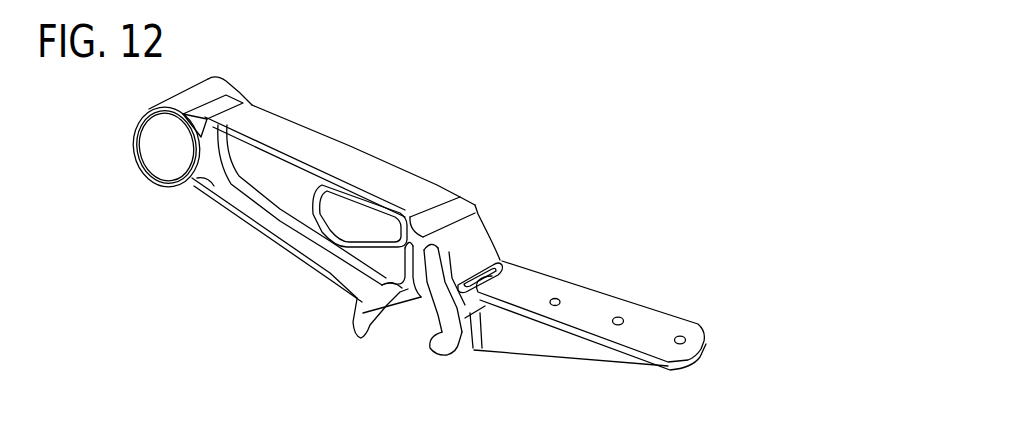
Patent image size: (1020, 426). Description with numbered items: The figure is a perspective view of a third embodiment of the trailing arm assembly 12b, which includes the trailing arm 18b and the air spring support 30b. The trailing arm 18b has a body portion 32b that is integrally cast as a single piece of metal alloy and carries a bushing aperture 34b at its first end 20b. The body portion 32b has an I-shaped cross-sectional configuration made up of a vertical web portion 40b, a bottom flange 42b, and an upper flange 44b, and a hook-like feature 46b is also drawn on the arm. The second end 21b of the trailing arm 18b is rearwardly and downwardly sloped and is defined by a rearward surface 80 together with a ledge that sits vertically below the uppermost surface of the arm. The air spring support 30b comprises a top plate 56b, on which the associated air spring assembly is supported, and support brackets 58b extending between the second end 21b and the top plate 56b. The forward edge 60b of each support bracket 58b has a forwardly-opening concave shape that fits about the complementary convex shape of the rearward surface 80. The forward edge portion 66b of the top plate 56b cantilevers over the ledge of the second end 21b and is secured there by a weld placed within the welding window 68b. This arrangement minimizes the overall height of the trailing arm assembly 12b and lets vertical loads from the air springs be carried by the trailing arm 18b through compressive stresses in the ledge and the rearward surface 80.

The trailing arm assembly 12b is at (473, 120).
The trailing arm 18b is at (287, 260).
The first end 20b is at (212, 198).
The second end 21b is at (352, 313).
The air spring support 30b is at (602, 278).
The body portion 32b is at (388, 155).
The bushing aperture 34b is at (218, 84).
The vertical web portion 40b is at (260, 185).
The bottom flange 42b is at (267, 227).
The upper flange 44b is at (300, 133).
The hook 46b is at (372, 320).
The top plate 56b is at (651, 314).
The support bracket 58b is at (572, 347).
The forward edge 60b is at (445, 343).
The forward edge portion 66b is at (510, 268).
The welding window 68b is at (499, 258).
The rearward surface 80 is at (487, 328).